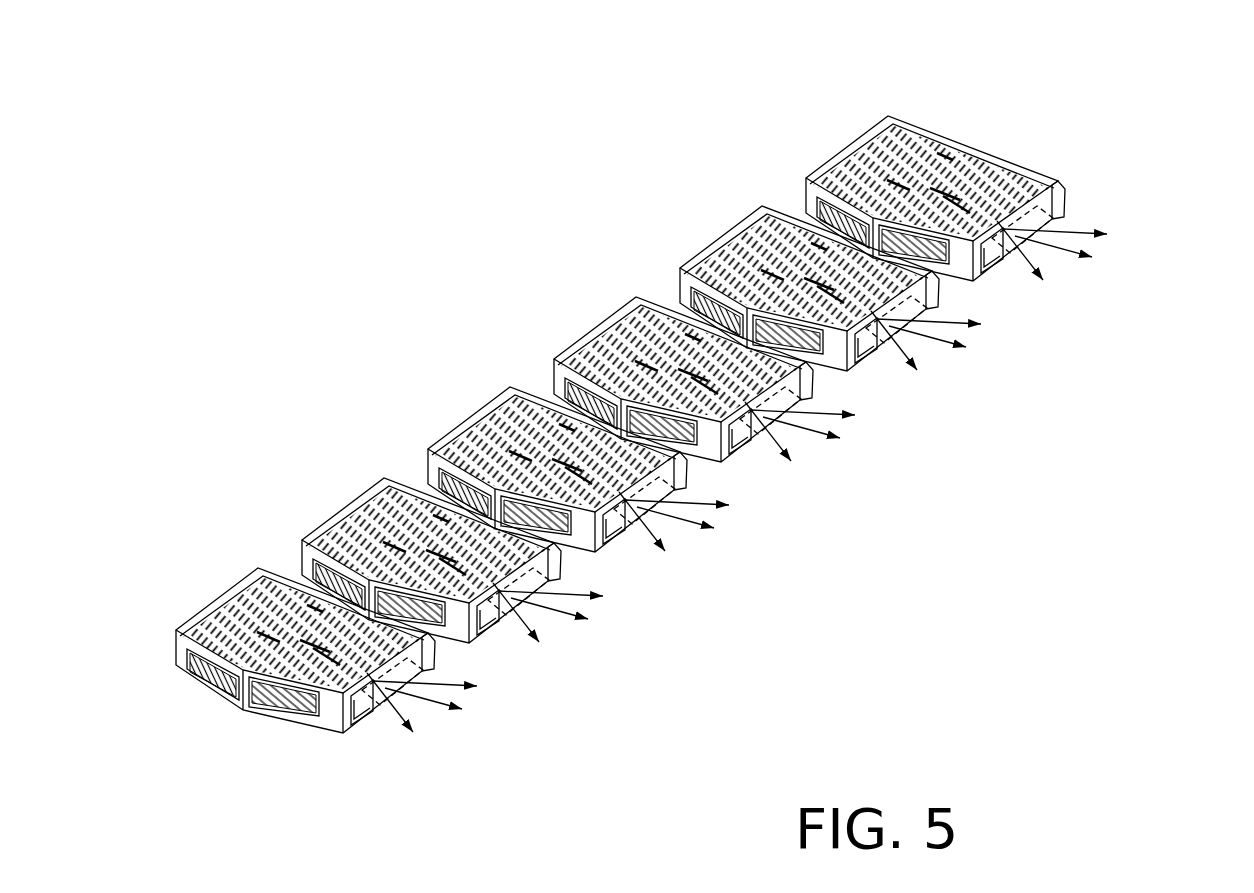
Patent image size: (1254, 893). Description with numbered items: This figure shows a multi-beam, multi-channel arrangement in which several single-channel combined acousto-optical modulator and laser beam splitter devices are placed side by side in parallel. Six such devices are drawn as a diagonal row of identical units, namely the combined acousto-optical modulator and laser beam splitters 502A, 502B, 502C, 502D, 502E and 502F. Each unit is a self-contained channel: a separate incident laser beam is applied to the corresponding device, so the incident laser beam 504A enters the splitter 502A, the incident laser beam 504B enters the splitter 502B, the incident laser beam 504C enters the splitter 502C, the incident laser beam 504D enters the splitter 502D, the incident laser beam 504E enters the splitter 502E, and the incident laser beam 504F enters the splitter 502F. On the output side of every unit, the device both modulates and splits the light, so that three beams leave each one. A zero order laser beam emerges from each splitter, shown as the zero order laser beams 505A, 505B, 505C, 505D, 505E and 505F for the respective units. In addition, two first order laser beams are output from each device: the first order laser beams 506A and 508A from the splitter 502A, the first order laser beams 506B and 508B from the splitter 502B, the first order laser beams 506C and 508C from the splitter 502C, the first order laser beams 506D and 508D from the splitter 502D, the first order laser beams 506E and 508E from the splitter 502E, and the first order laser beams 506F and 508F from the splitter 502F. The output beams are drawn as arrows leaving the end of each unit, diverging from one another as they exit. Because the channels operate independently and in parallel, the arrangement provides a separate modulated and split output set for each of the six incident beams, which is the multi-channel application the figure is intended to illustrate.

The combined acousto-optical modulator and laser beam splitter 502A is at (235, 582).
The incident laser beam 504A is at (232, 623).
The zero order laser beam 505A is at (440, 695).
The first order laser beam 506A is at (395, 718).
The first order laser beam 508A is at (480, 685).
The combined acousto-optical modulator and laser beam splitter 502B is at (363, 494).
The incident laser beam 504B is at (358, 533).
The zero order laser beam 505B is at (566, 604).
The first order laser beam 506B is at (521, 627).
The first order laser beam 508B is at (606, 596).
The combined acousto-optical modulator and laser beam splitter 502C is at (483, 407).
The incident laser beam 504C is at (484, 442).
The zero order laser beam 505C is at (692, 514).
The first order laser beam 506C is at (647, 537).
The first order laser beam 508C is at (731, 505).
The combined acousto-optical modulator and laser beam splitter 502D is at (611, 314).
The incident laser beam 504D is at (610, 352).
The zero order laser beam 505D is at (818, 423).
The first order laser beam 506D is at (773, 446).
The first order laser beam 508D is at (857, 414).
The combined acousto-optical modulator and laser beam splitter 502E is at (734, 214).
The incident laser beam 504E is at (736, 261).
The zero order laser beam 505E is at (944, 333).
The first order laser beam 506E is at (899, 356).
The first order laser beam 508E is at (972, 318).
The combined acousto-optical modulator and laser beam splitter 502F is at (864, 130).
The incident laser beam 504F is at (848, 165).
The zero order laser beam 505F is at (1053, 247).
The first order laser beam 506F is at (1022, 267).
The first order laser beam 508F is at (1073, 225).